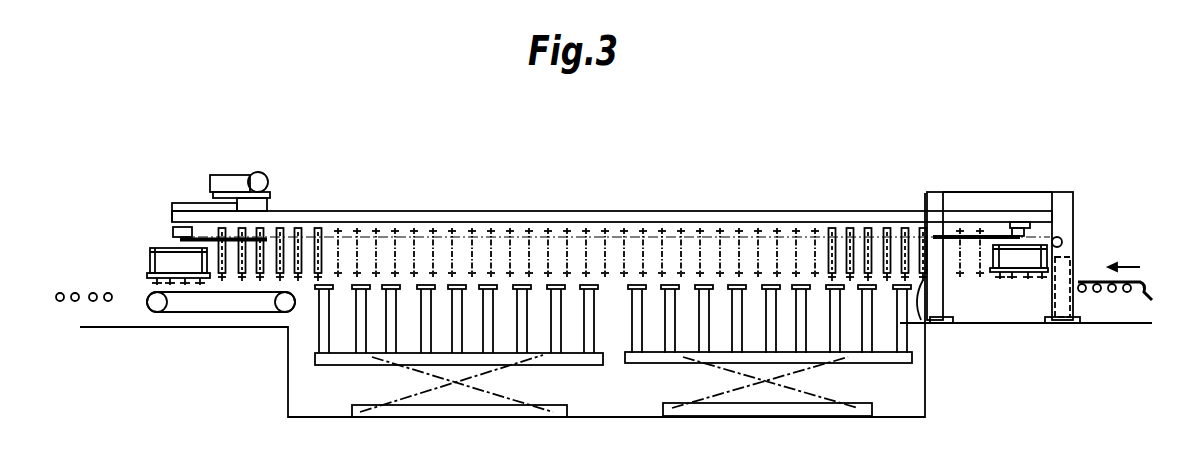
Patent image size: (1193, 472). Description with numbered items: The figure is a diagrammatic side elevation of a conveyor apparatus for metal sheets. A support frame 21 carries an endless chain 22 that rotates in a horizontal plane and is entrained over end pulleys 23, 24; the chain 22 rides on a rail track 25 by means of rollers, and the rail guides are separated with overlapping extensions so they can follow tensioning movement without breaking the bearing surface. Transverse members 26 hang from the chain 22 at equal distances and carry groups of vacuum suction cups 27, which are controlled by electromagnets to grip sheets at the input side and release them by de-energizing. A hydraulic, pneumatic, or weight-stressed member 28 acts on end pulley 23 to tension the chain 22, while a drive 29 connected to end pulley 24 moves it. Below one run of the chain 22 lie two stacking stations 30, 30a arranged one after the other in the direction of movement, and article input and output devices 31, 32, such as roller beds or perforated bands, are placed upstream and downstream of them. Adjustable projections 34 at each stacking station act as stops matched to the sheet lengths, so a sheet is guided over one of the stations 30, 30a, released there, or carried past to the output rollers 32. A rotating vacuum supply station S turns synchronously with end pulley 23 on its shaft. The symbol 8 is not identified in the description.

The support frame 21 is at (213, 207).
The endless chain 22 is at (750, 236).
The end pulley 23 is at (1005, 232).
The end pulley 24 is at (182, 238).
The rail track 25 is at (813, 214).
The transverse members 26 is at (152, 256).
The vacuum suction cups 27 is at (188, 284).
The tensioning member 28 is at (1063, 300).
The drive means 29 is at (258, 178).
The stacking station 30 is at (893, 357).
The stacking station 30a is at (573, 355).
The article input device 31 is at (1110, 296).
The article output device 32 is at (95, 301).
The projections 34 is at (922, 305).
The workpiece 8 is at (131, 295).